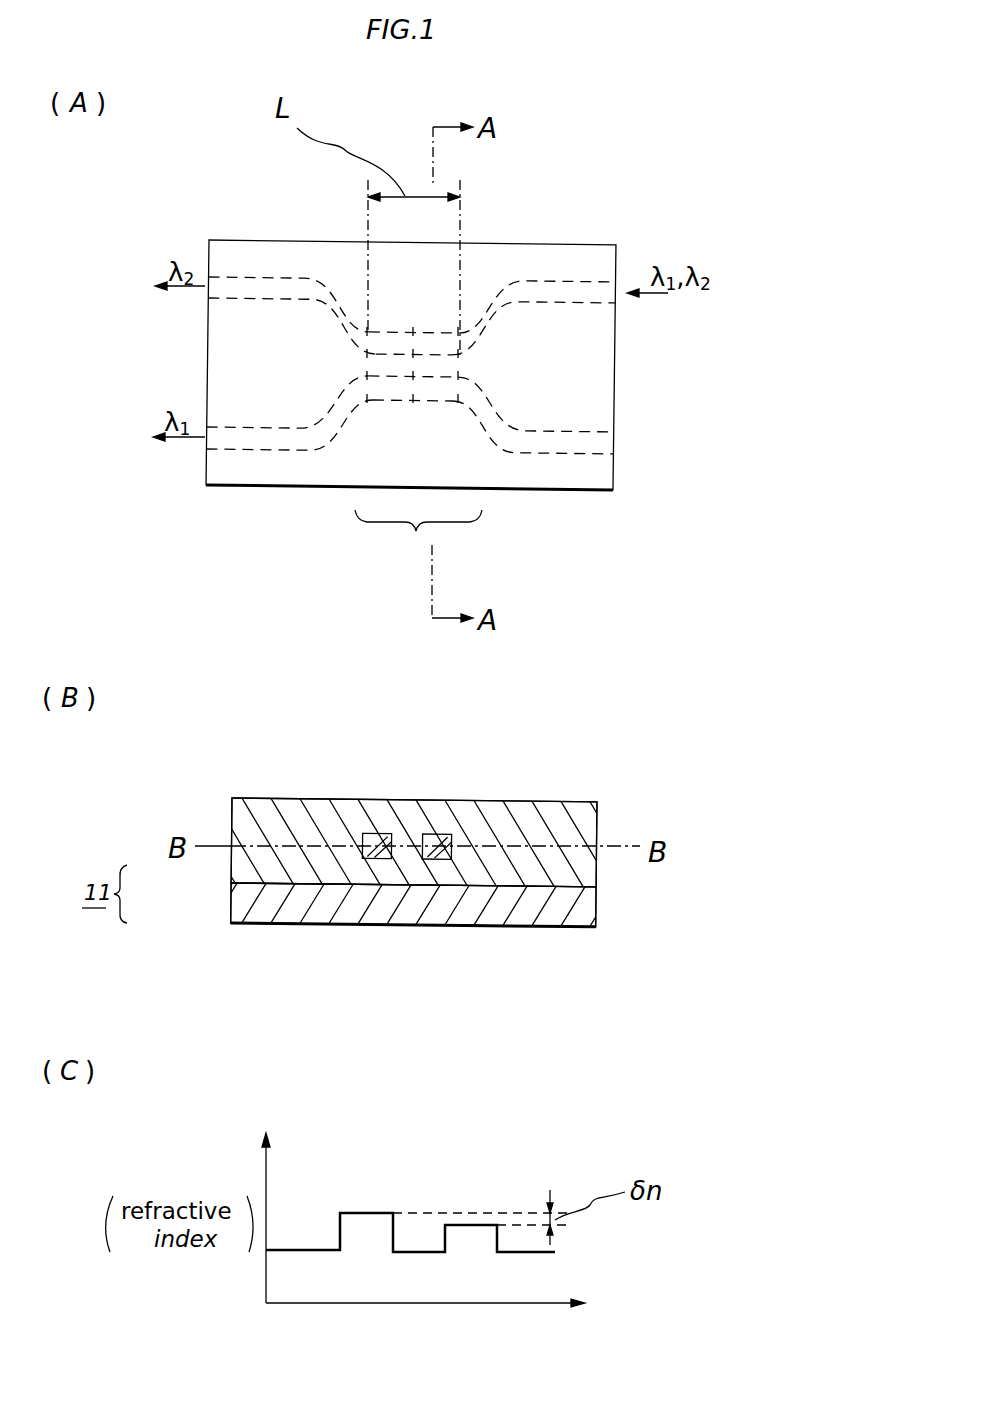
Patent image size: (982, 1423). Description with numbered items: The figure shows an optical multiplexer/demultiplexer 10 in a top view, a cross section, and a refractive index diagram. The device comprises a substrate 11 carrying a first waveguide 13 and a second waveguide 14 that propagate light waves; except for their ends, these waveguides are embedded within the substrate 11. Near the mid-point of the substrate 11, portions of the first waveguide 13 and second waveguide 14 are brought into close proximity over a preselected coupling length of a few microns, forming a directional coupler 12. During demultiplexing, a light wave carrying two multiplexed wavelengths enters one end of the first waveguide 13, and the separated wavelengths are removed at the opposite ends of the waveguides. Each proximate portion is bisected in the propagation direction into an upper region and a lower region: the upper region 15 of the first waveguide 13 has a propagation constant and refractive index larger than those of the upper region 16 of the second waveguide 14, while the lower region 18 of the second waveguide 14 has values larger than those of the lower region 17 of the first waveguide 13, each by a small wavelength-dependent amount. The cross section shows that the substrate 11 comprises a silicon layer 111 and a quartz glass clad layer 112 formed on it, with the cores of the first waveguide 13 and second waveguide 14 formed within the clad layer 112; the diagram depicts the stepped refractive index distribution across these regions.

The optical multiplexer/demultiplexer 10 is at (617, 348).
The substrate 11 is at (255, 240).
The directional coupler 12 is at (442, 531).
The first waveguide 13 is at (556, 290).
The second waveguide 14 is at (557, 443).
The upper region of the first waveguide 15 is at (436, 333).
The upper region of the second waveguide 16 is at (440, 400).
The lower region of the first waveguide 17 is at (388, 333).
The lower region of the second waveguide 18 is at (387, 390).
The silicon layer 111 is at (232, 905).
The clad layer 112 is at (232, 868).